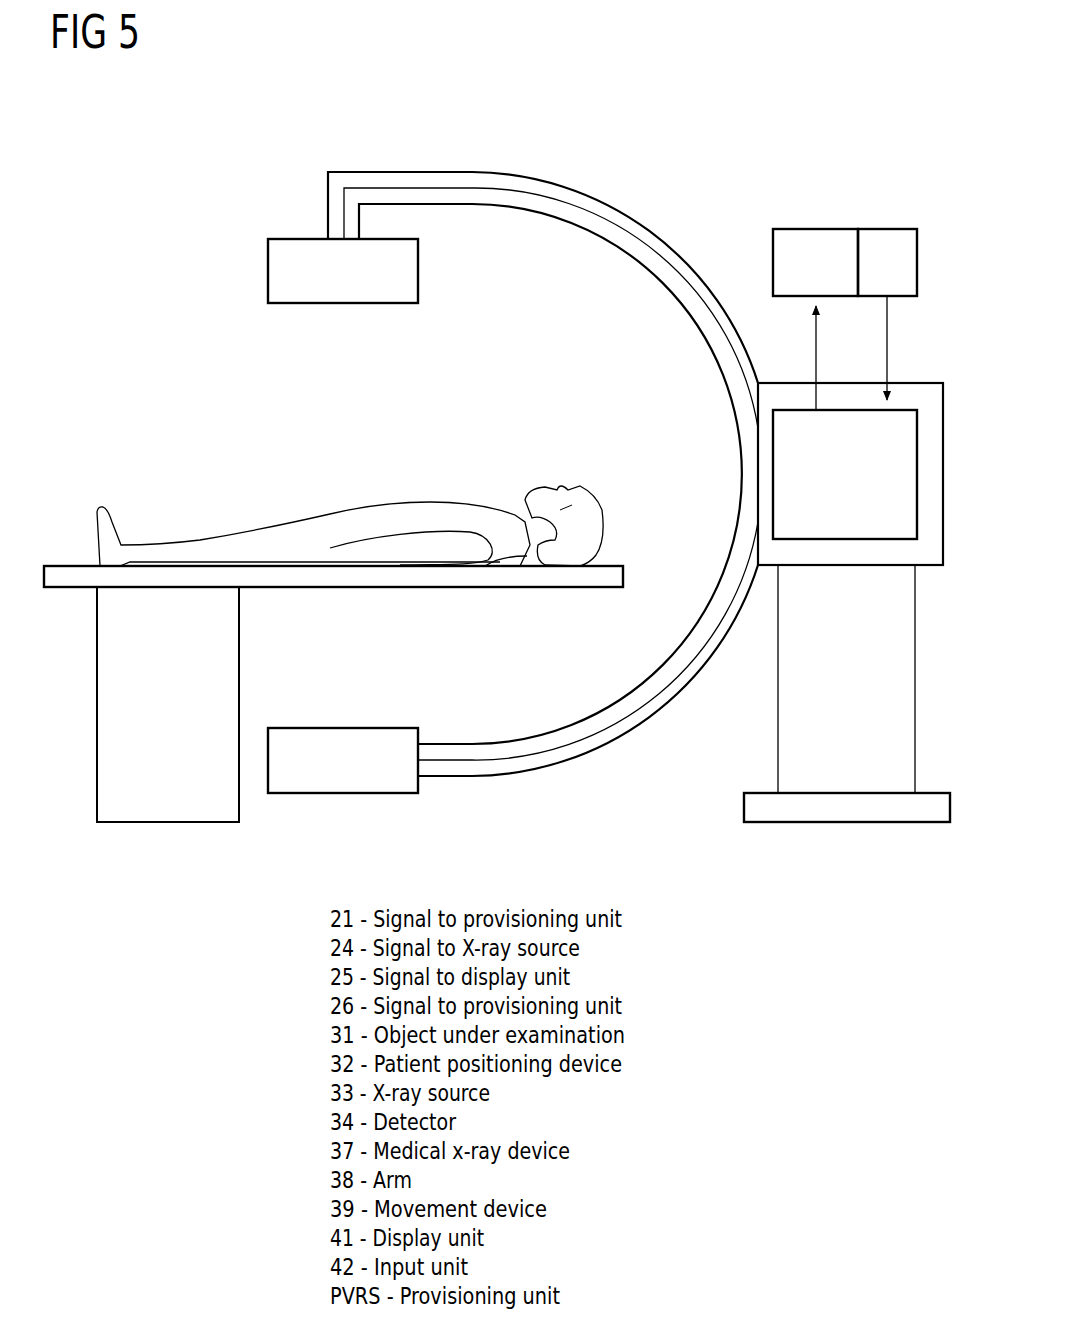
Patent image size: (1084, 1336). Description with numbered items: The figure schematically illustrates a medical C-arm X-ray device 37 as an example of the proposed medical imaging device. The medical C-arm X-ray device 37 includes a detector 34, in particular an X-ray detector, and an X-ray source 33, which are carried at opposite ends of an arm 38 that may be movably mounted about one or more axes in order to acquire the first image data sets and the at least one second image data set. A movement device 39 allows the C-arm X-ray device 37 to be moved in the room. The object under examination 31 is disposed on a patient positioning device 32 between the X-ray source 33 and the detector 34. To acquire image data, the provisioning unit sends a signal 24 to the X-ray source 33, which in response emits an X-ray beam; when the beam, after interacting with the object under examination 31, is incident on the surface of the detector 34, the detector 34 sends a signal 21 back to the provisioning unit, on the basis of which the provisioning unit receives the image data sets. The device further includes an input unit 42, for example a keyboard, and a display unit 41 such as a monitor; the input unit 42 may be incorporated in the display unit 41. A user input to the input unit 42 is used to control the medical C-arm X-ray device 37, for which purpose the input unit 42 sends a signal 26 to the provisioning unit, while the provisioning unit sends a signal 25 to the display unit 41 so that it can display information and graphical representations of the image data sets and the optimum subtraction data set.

The signal 21 is at (425, 188).
The signal 24 is at (515, 758).
The signal 25 is at (812, 327).
The signal 26 is at (890, 322).
The object under examination 31 is at (403, 498).
The patient positioning device 32 is at (149, 837).
The X-ray source 33 is at (345, 793).
The detector 34 is at (293, 239).
The medical C-arm X-ray device 37 is at (615, 488).
The arm 38 is at (378, 172).
The movement device 39 is at (846, 822).
The display unit 41 is at (808, 229).
The input unit 42 is at (880, 229).